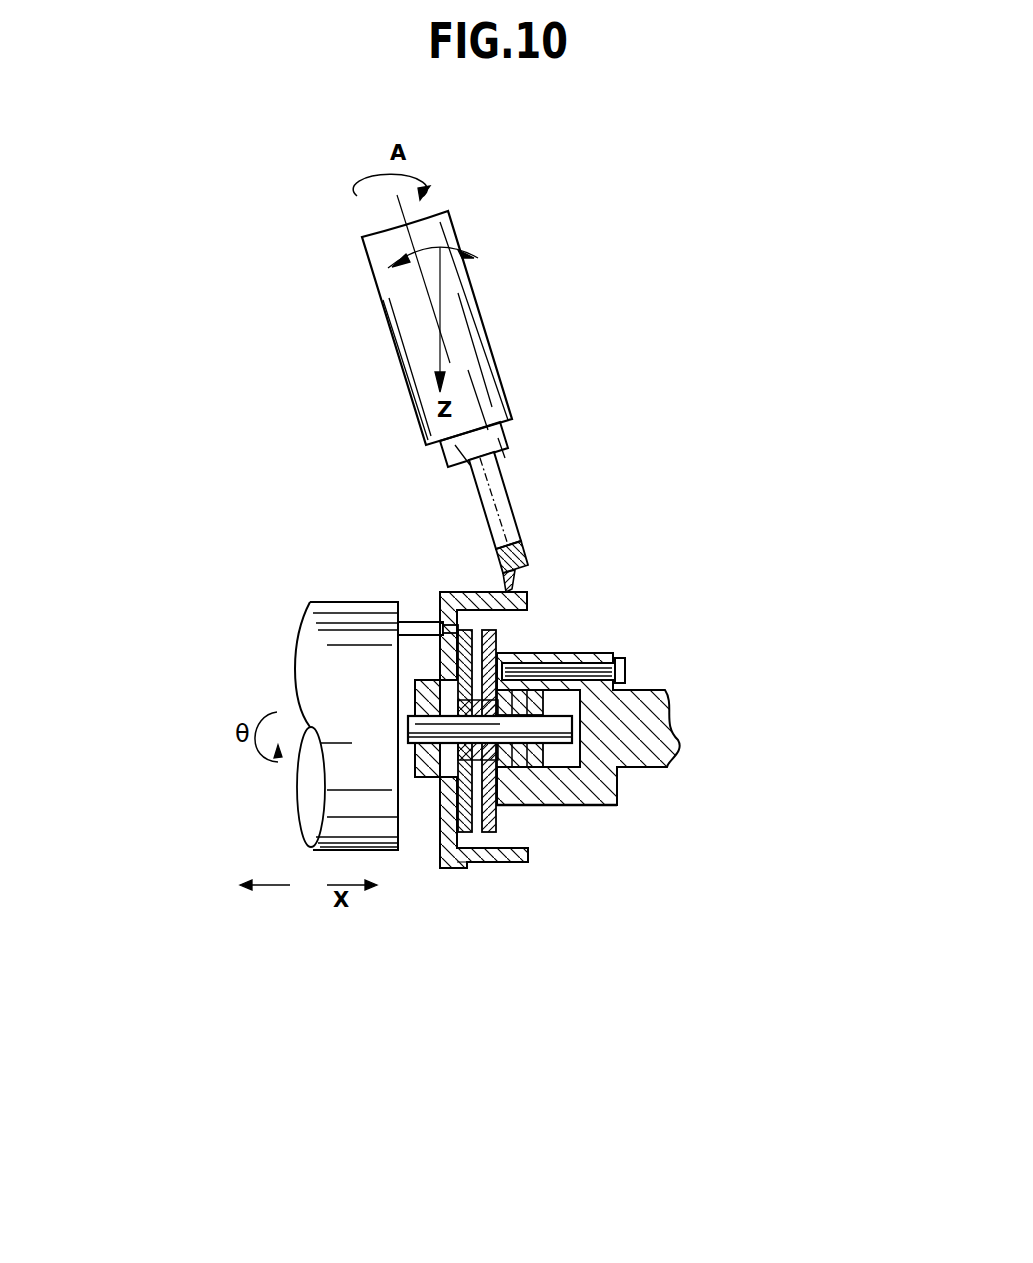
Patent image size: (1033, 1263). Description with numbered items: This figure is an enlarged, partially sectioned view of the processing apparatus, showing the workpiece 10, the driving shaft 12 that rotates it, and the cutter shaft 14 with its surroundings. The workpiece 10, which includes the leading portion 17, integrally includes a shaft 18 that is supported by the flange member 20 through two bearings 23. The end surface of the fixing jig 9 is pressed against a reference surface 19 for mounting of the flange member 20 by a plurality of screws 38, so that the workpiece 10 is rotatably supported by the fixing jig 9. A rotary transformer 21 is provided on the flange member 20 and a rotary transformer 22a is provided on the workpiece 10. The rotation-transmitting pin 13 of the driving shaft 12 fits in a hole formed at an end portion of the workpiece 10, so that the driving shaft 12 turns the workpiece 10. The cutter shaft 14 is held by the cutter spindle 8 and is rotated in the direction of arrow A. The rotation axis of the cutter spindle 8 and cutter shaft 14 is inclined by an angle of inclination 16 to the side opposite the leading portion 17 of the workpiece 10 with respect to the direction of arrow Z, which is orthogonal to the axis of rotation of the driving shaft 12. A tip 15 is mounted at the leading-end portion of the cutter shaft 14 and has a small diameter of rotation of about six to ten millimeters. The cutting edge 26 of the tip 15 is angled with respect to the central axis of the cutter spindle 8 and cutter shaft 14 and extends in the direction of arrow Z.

The cutter spindle 8 is at (480, 367).
The fixing jig 9 is at (585, 657).
The workpiece 10 is at (467, 865).
The driving shaft 12 is at (307, 613).
The rotation-transmitting pin 13 is at (420, 623).
The cutter shaft 14 is at (510, 505).
The tip 15 is at (498, 553).
The angle of inclination 16 is at (473, 252).
The leading portion 17 is at (505, 822).
The shaft 18 is at (562, 760).
The reference surface for mounting 19 is at (542, 805).
The flange member 20 is at (530, 772).
The rotary transformer 21 is at (512, 805).
The rotary transformer 22a is at (463, 822).
The bearings 23 is at (537, 707).
The cutting edge 26 is at (505, 582).
The screws 38 is at (628, 668).